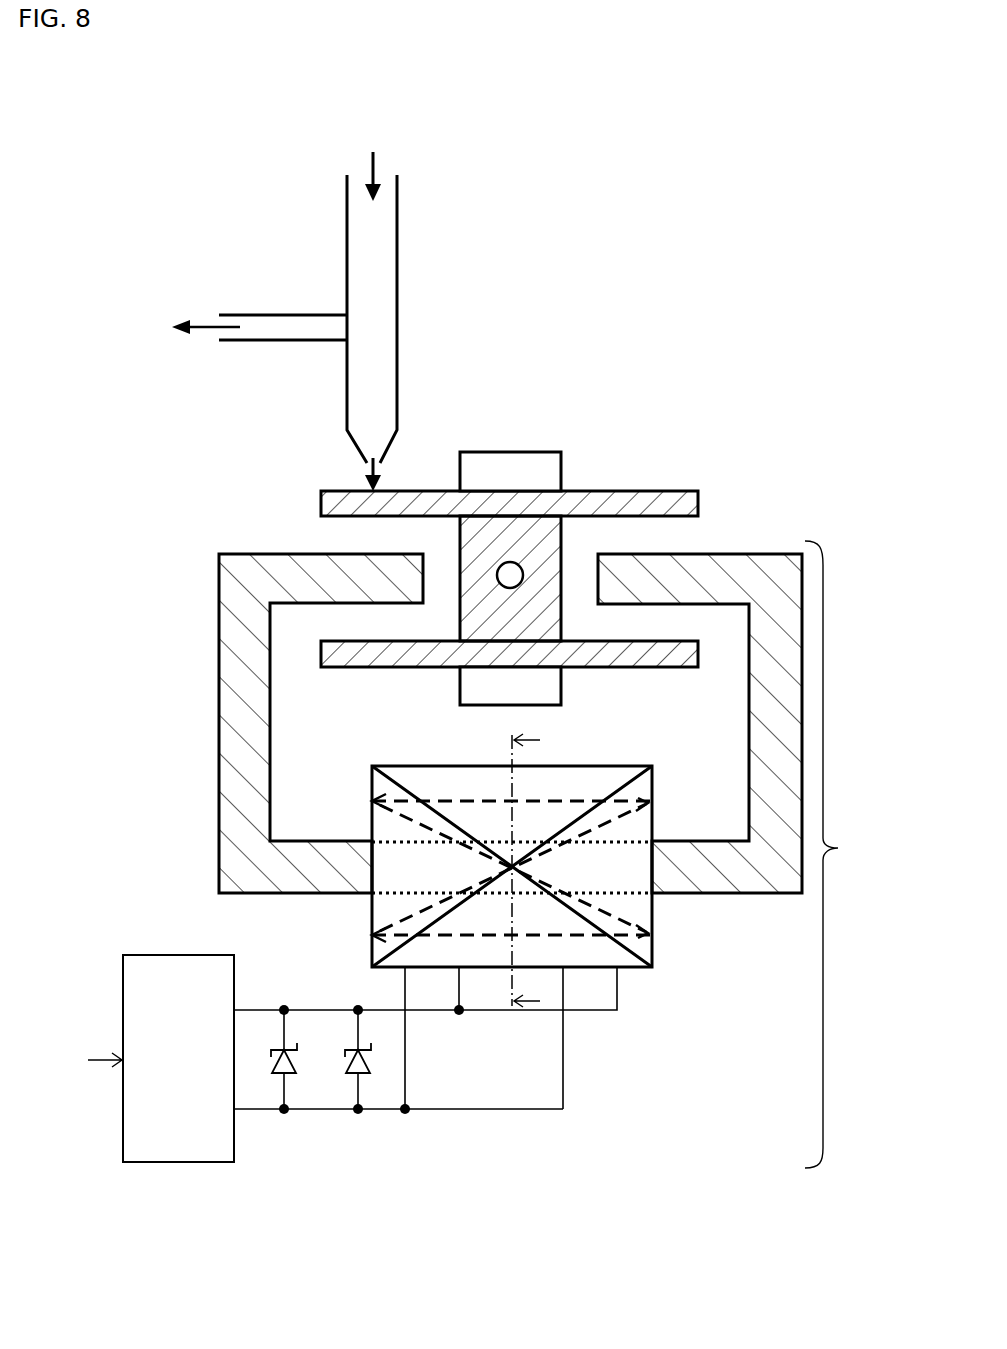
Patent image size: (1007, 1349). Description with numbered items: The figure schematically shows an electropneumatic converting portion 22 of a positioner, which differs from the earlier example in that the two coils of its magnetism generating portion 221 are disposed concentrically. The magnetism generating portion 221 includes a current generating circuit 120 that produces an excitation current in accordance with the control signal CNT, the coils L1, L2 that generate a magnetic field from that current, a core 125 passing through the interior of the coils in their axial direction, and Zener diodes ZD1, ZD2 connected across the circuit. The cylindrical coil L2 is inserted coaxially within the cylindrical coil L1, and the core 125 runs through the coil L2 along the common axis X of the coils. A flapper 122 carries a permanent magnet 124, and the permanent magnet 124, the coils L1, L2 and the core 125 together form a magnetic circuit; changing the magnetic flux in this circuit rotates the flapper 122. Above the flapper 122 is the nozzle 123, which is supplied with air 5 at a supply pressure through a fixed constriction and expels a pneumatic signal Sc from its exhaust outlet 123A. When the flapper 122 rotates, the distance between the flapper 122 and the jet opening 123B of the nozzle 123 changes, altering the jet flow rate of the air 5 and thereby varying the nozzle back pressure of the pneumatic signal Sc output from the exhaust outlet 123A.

The electropneumatic converting portion 22 is at (811, 117).
The air 5 is at (373, 163).
The nozzle 123 is at (399, 262).
The exhaust outlet 123A is at (221, 314).
The jet opening 123B is at (368, 470).
The flapper 122 is at (699, 491).
The permanent magnet 124 is at (561, 452).
The core 125 is at (238, 553).
The magnetism generating portion 221 is at (845, 854).
The current generating circuit 120 is at (162, 953).
The coil L1 is at (372, 948).
The coil L2 is at (652, 943).
The Zener diode ZD1 is at (343, 1059).
The Zener diode ZD2 is at (269, 1059).
The control signal CNT is at (83, 1061).
The pneumatic signal Sc is at (194, 327).
The X axis X is at (534, 871).